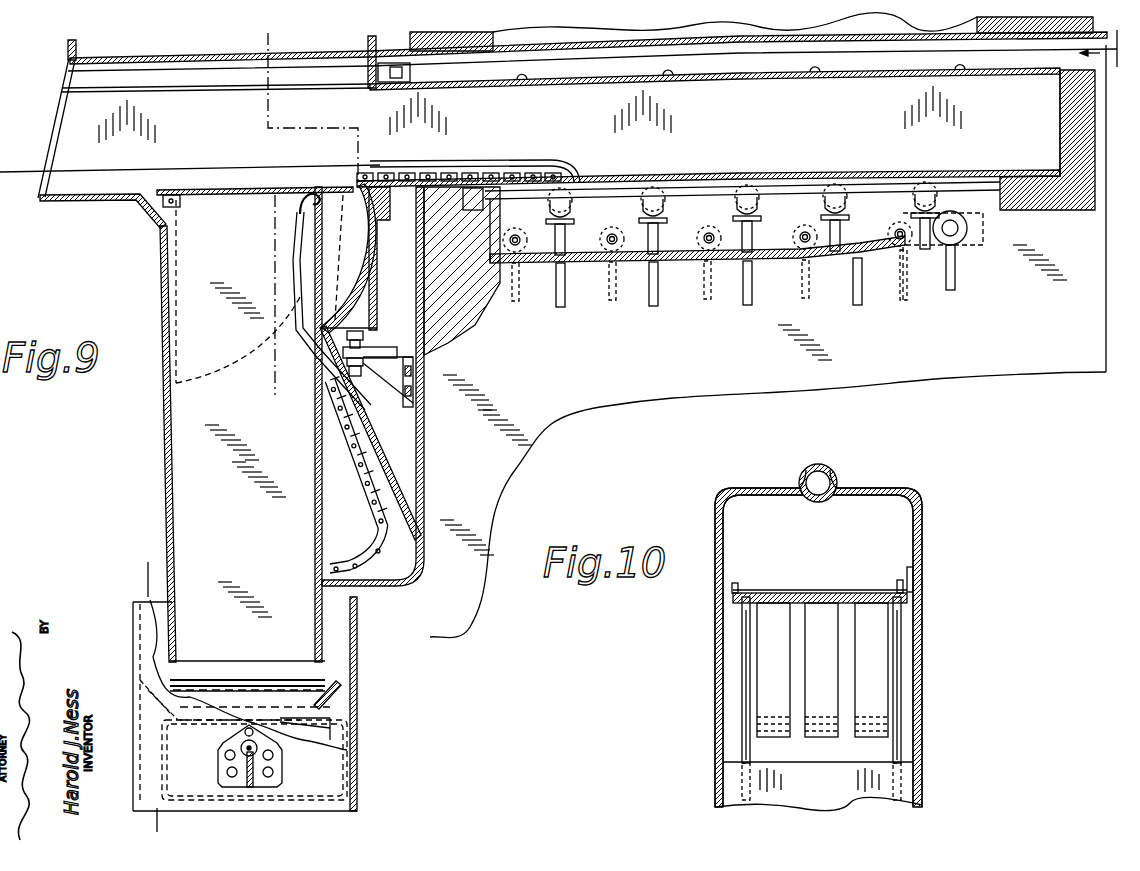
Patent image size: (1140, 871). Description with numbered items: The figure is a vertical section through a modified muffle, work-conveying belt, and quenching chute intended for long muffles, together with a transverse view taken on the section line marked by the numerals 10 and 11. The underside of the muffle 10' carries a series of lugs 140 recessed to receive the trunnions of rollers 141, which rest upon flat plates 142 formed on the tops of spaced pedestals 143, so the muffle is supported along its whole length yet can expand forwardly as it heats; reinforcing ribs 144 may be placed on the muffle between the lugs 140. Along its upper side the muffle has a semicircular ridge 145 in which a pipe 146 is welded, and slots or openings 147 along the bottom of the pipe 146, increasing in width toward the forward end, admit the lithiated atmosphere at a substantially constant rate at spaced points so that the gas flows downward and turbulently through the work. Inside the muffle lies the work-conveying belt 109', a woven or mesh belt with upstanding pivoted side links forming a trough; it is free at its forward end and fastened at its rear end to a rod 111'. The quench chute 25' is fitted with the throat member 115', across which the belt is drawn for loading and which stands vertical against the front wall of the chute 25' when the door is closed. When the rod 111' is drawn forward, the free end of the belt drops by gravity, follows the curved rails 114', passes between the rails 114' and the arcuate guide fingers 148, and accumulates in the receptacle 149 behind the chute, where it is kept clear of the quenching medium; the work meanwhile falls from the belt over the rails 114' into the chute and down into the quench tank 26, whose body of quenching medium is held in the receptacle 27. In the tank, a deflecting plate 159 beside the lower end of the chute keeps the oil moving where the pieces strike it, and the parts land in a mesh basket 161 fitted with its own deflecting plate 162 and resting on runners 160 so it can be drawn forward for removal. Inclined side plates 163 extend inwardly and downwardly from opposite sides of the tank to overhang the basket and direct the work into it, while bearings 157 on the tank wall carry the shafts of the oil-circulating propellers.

In FIG. 9, the muffle 10 is at (288, 214).
In FIG. 9, the rectangular opening 11 is at (160, 572).
In FIG. 9, the modified muffle 10' is at (708, 128).
In FIG. 10, the modified muffle 10' is at (844, 649).
In FIG. 9, the quench chute 25' is at (313, 424).
In FIG. 9, the quench tank 26 is at (341, 657).
In FIG. 9, the receptacle 27 is at (347, 762).
In FIG. 9, the work conveying belt 109' is at (468, 154).
In FIG. 10, the work conveying belt 109' is at (820, 581).
In FIG. 9, the rod 111' is at (190, 156).
In FIG. 10, the rod 111' is at (856, 572).
In FIG. 9, the curved rails 114' is at (332, 362).
In FIG. 9, the throat member 115' is at (236, 259).
In FIG. 10, the throat member 115' is at (828, 670).
In FIG. 9, the lugs 140 is at (566, 196).
In FIG. 9, the rollers 141 is at (548, 208).
In FIG. 9, the flat plates 142 is at (522, 252).
In FIG. 9, the pedestals 143 is at (570, 242).
In FIG. 9, the reinforcing ribs 144 is at (625, 195).
In FIG. 10, the semicircular ridge 145 is at (842, 470).
In FIG. 9, the pipe 146 is at (772, 79).
In FIG. 10, the pipe 146 is at (806, 497).
In FIG. 9, the slots or openings 147 is at (821, 76).
In FIG. 10, the slots or openings 147 is at (826, 497).
In FIG. 9, the arcuate guide fingers 148 is at (306, 207).
In FIG. 10, the arcuate guide fingers 148 is at (745, 646).
In FIG. 9, the receptacle 149 is at (333, 503).
In FIG. 9, the bearings 157 is at (258, 786).
In FIG. 9, the deflecting plate 159 is at (254, 673).
In FIG. 9, the runners 160 is at (344, 791).
In FIG. 9, the mesh basket 161 is at (320, 776).
In FIG. 9, the deflecting plate 162 is at (330, 729).
In FIG. 9, the inclined side plates 163 is at (346, 688).